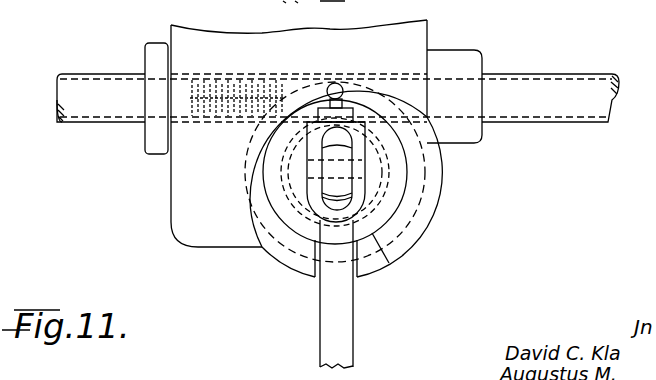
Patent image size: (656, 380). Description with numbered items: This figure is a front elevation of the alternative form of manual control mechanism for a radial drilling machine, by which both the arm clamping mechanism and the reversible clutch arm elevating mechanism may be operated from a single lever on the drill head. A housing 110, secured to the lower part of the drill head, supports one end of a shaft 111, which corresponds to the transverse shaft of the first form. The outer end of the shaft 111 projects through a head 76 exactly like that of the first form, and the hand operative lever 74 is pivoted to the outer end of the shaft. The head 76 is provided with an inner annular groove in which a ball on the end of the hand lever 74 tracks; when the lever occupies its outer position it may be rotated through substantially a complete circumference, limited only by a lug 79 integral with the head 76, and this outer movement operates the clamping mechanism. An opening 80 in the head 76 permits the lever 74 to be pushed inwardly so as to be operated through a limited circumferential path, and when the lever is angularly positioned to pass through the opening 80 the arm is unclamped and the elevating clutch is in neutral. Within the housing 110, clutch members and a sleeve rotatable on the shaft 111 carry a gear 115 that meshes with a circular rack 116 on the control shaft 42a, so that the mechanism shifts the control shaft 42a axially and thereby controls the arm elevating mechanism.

The control shaft 42a is at (99, 78).
The housing 110 is at (313, 133).
The shaft 111 is at (334, 181).
The gear 115 is at (395, 163).
The circular rack 116 is at (221, 129).
The hand operative lever 74 is at (345, 343).
The head 76 is at (429, 223).
The lug 79 is at (380, 265).
The opening 80 is at (354, 278).